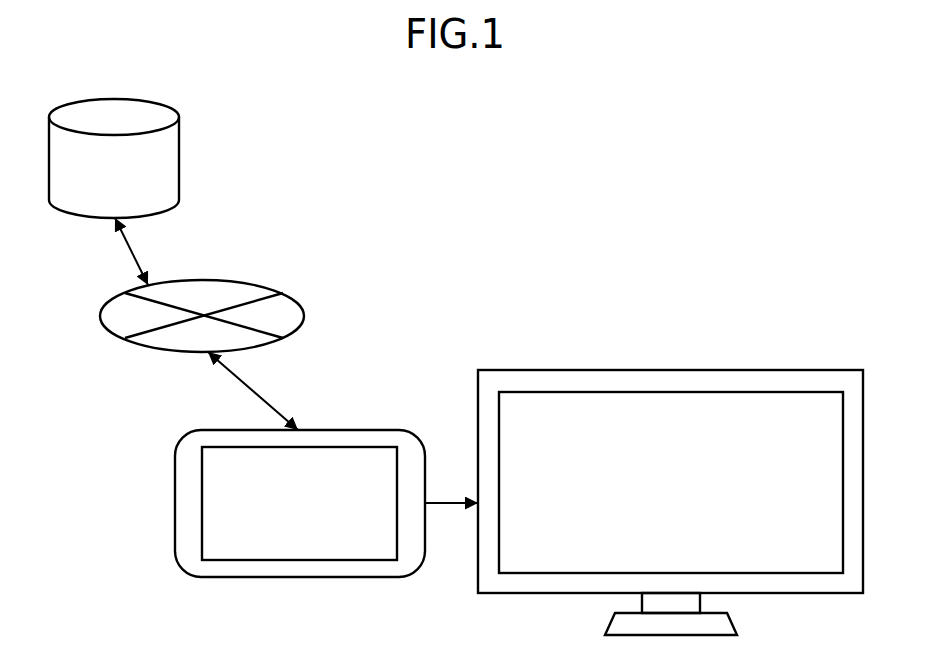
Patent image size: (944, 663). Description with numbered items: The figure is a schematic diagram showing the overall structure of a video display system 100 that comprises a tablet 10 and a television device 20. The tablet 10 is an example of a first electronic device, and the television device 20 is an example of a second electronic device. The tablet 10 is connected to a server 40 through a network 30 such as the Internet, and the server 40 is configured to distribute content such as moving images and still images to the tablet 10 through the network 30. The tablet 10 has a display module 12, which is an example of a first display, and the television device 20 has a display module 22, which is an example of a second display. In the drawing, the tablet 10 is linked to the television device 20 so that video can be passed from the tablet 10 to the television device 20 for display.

The video display system 100 is at (474, 276).
The tablet 10 is at (276, 490).
The display module 12 is at (227, 516).
The television device 20 is at (670, 479).
The display module 22 is at (556, 405).
The network 30 is at (276, 272).
The server 40 is at (137, 84).